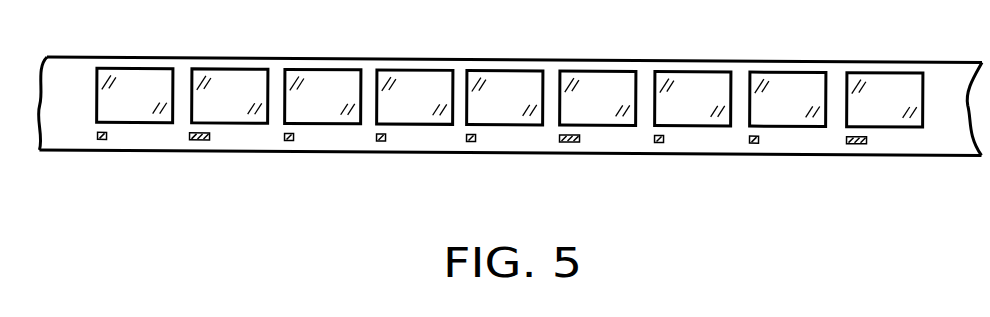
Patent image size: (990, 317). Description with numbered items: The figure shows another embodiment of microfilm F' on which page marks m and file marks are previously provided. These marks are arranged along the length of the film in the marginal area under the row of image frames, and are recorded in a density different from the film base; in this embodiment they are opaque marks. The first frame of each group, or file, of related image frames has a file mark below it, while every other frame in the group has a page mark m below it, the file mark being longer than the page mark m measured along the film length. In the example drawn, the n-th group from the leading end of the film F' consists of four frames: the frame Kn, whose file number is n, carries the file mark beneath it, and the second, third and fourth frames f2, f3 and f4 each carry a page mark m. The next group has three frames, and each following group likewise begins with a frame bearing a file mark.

The microfilm F' is at (510, 134).
The first frame of the n-th group Kn is at (228, 82).
The second frame f2 is at (325, 82).
The third frame f3 is at (418, 78).
The fourth frame f4 is at (508, 80).
The page mark m is at (100, 142).